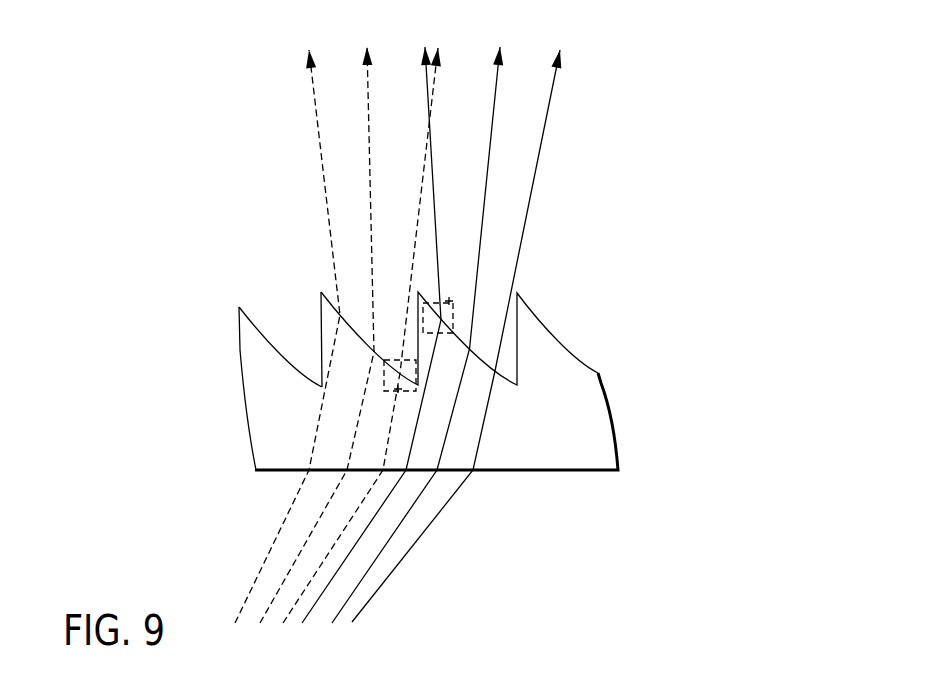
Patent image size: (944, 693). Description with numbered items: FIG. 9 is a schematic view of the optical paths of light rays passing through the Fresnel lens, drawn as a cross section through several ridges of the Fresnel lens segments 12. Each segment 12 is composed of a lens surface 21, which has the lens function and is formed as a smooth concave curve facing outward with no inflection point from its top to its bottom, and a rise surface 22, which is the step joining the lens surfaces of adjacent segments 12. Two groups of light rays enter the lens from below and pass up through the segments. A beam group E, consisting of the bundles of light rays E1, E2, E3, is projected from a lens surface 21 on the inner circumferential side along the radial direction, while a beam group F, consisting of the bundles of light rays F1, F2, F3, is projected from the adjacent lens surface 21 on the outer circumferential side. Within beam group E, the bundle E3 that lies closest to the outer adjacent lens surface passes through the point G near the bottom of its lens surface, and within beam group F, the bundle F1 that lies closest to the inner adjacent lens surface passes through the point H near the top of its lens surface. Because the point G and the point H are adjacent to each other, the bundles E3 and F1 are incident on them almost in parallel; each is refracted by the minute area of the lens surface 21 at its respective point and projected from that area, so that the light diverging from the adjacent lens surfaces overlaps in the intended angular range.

The Fresnel lens segment 12 is at (590, 268).
The lens surface 21 is at (262, 333).
The rise surface 22 is at (320, 320).
The bundle of light rays E1 is at (287, 322).
The bundle of light rays E2 is at (317, 319).
The bundle of light rays E3 is at (370, 319).
The bundle of light rays F1 is at (371, 319).
The bundle of light rays F2 is at (421, 319).
The bundle of light rays F3 is at (461, 321).
The point G near the bottom G is at (398, 358).
The point H near the top H is at (450, 301).
The beam group E is at (292, 622).
The beam group F is at (363, 622).